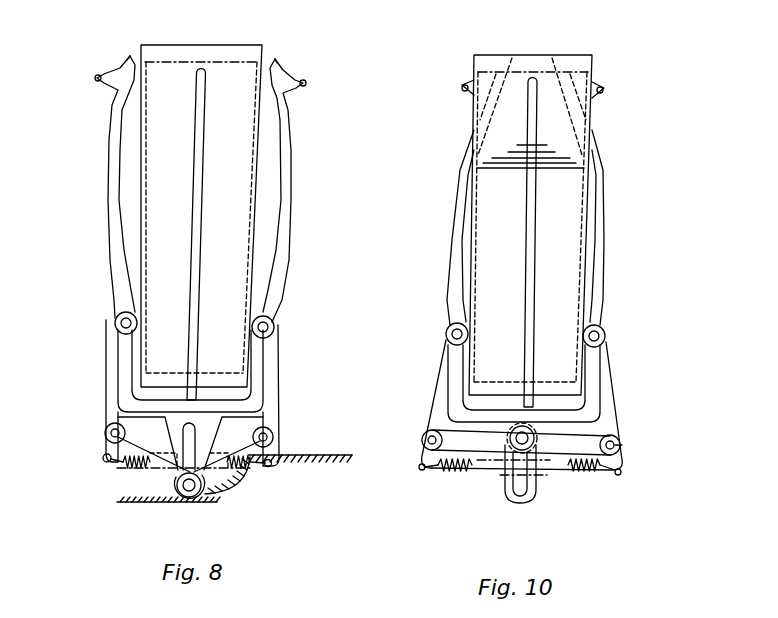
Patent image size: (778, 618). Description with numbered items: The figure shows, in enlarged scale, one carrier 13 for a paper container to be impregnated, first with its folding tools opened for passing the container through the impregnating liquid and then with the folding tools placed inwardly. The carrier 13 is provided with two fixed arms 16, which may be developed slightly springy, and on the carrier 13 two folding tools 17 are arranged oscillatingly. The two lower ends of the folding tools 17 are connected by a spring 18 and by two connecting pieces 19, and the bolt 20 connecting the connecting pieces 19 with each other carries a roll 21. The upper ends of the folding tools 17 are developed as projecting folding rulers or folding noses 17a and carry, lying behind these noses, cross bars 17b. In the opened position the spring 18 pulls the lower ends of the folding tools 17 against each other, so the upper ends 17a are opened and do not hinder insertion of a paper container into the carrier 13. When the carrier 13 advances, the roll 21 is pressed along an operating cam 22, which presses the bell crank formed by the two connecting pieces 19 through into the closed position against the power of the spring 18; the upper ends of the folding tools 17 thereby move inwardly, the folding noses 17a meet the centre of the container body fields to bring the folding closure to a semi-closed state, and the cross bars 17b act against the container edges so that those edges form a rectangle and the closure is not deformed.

In FIG. 8, the carrier 13 is at (127, 387).
In FIG. 10, the carrier 13 is at (588, 393).
In FIG. 8, the fixed arms 16 is at (198, 160).
In FIG. 10, the fixed arms 16 is at (528, 267).
In FIG. 8, the folding tools 17 is at (112, 220).
In FIG. 10, the folding tools 17 is at (453, 277).
In FIG. 8, the folding noses 17a is at (127, 63).
In FIG. 8, the cross bars 17b is at (95, 78).
In FIG. 10, the cross bars 17b is at (462, 90).
In FIG. 8, the spring 18 is at (130, 467).
In FIG. 10, the spring 18 is at (567, 476).
In FIG. 8, the connecting pieces 19 is at (115, 430).
In FIG. 10, the connecting pieces 19 is at (458, 442).
In FIG. 8, the bolt 20 is at (200, 478).
In FIG. 10, the bolt 20 is at (530, 443).
In FIG. 8, the roll 21 is at (185, 484).
In FIG. 10, the roll 21 is at (615, 443).
In FIG. 8, the operating cam 22 is at (303, 460).